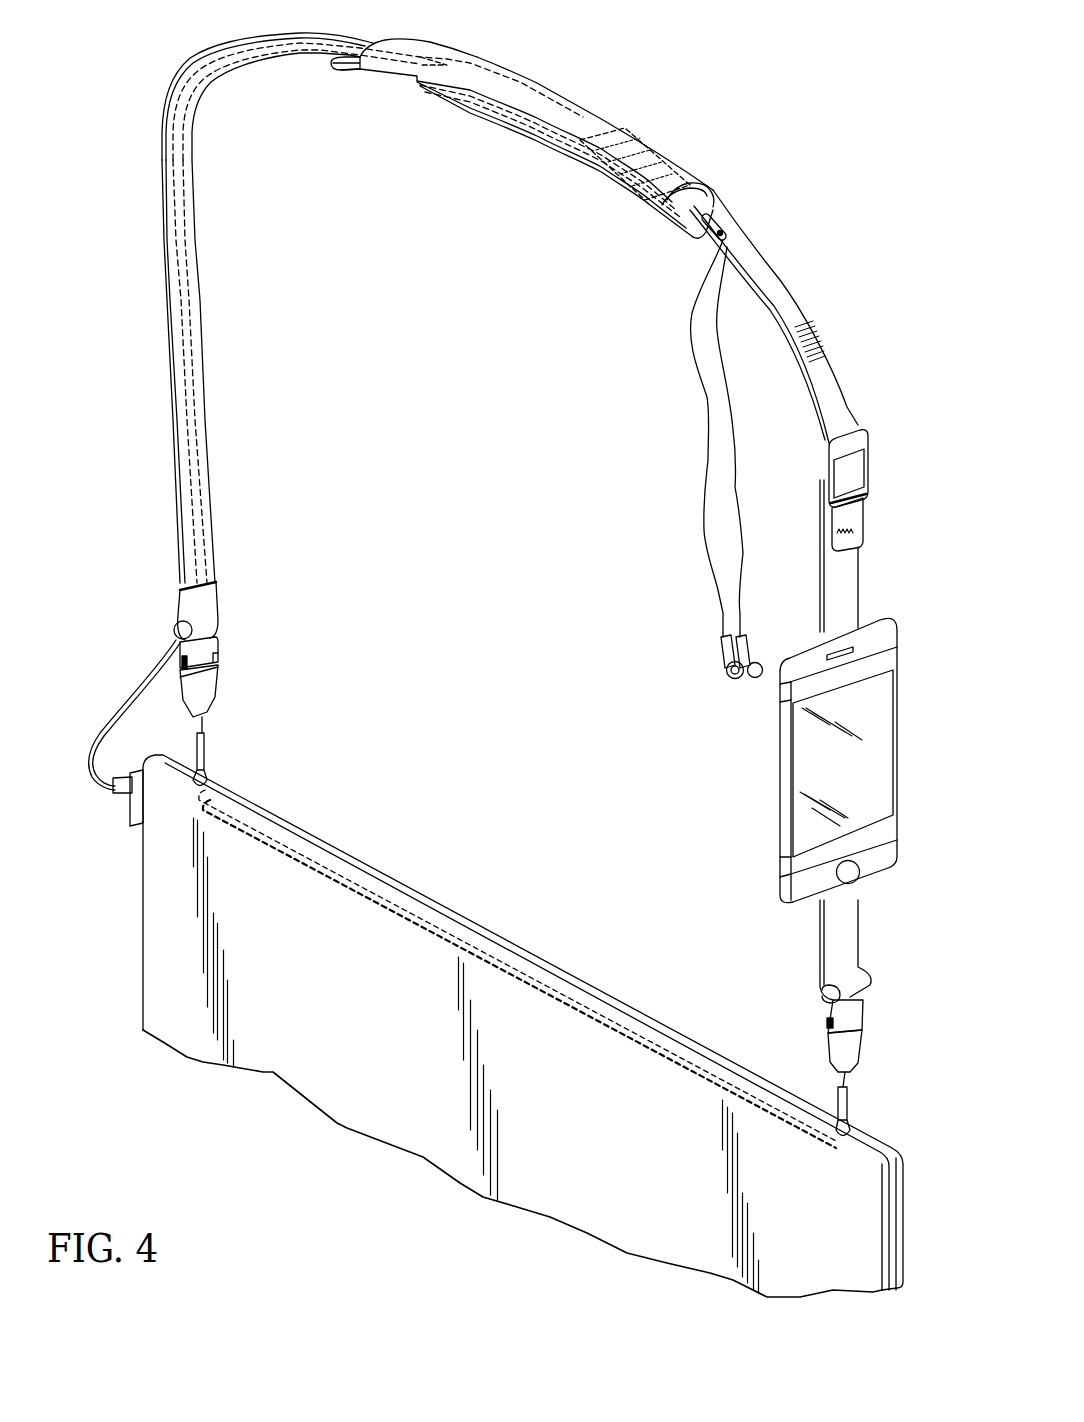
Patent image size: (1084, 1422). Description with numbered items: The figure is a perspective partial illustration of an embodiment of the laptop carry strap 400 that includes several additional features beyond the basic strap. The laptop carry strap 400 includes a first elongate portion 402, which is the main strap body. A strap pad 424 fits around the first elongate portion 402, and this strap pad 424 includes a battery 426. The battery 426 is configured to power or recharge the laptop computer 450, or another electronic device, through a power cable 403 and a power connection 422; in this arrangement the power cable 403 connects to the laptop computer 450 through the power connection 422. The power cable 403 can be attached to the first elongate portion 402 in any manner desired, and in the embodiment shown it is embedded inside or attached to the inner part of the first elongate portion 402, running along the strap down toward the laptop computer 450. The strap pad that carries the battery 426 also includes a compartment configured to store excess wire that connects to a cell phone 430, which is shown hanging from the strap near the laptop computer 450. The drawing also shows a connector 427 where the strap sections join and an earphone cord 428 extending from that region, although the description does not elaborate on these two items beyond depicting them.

The laptop carry strap 400 is at (141, 311).
The first elongate portion 402 is at (777, 288).
The power cable 403 is at (203, 542).
The power connection 422 is at (140, 812).
The strap pad 424 is at (430, 50).
The battery 426 is at (580, 119).
The strap connector 427 is at (670, 167).
The earphones 428 is at (717, 502).
The cell phone 430 is at (887, 657).
The laptop computer 450 is at (140, 990).